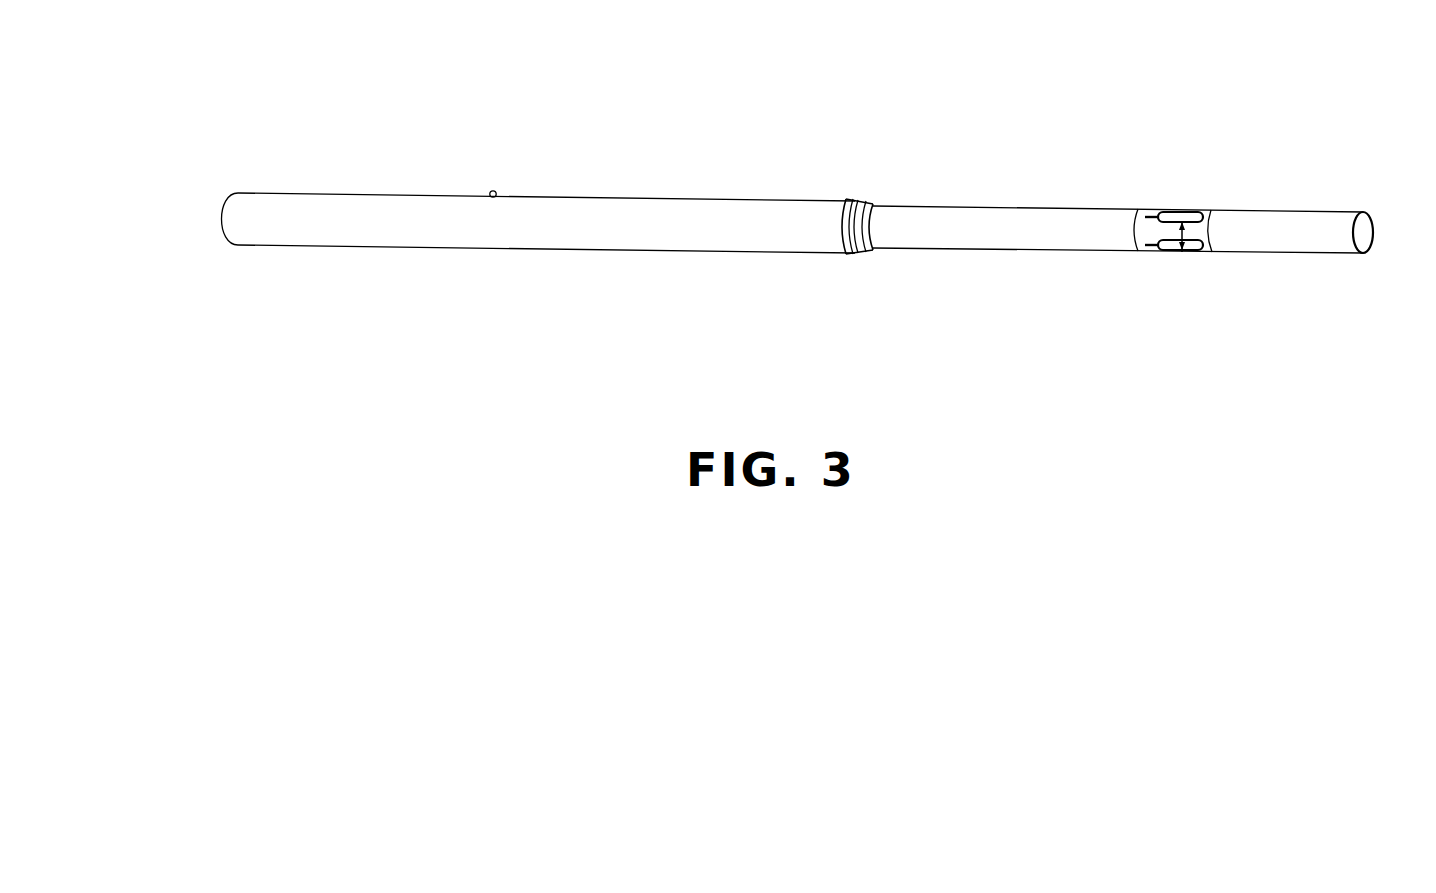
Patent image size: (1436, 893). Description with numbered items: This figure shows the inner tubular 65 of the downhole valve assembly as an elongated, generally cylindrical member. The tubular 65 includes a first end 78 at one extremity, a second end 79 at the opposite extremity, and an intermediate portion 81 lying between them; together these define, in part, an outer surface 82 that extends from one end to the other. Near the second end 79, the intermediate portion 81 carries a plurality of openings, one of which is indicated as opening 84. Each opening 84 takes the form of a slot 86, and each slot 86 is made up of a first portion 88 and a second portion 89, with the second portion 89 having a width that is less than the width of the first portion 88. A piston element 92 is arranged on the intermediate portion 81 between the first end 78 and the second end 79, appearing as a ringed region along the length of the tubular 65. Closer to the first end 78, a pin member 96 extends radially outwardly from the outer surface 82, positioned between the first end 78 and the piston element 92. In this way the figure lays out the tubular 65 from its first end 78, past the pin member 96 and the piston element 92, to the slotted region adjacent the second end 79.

The tubular 65 is at (467, 65).
The first end 78 is at (238, 192).
The second end 79 is at (1348, 213).
The intermediate portion 81 is at (822, 203).
The outer surface 82 is at (664, 207).
The opening 84 is at (1188, 200).
The slot 86 is at (1183, 253).
The first portion 88 is at (1162, 211).
The second portion 89 is at (1163, 213).
The piston element 92 is at (868, 263).
The pin member 96 is at (488, 191).